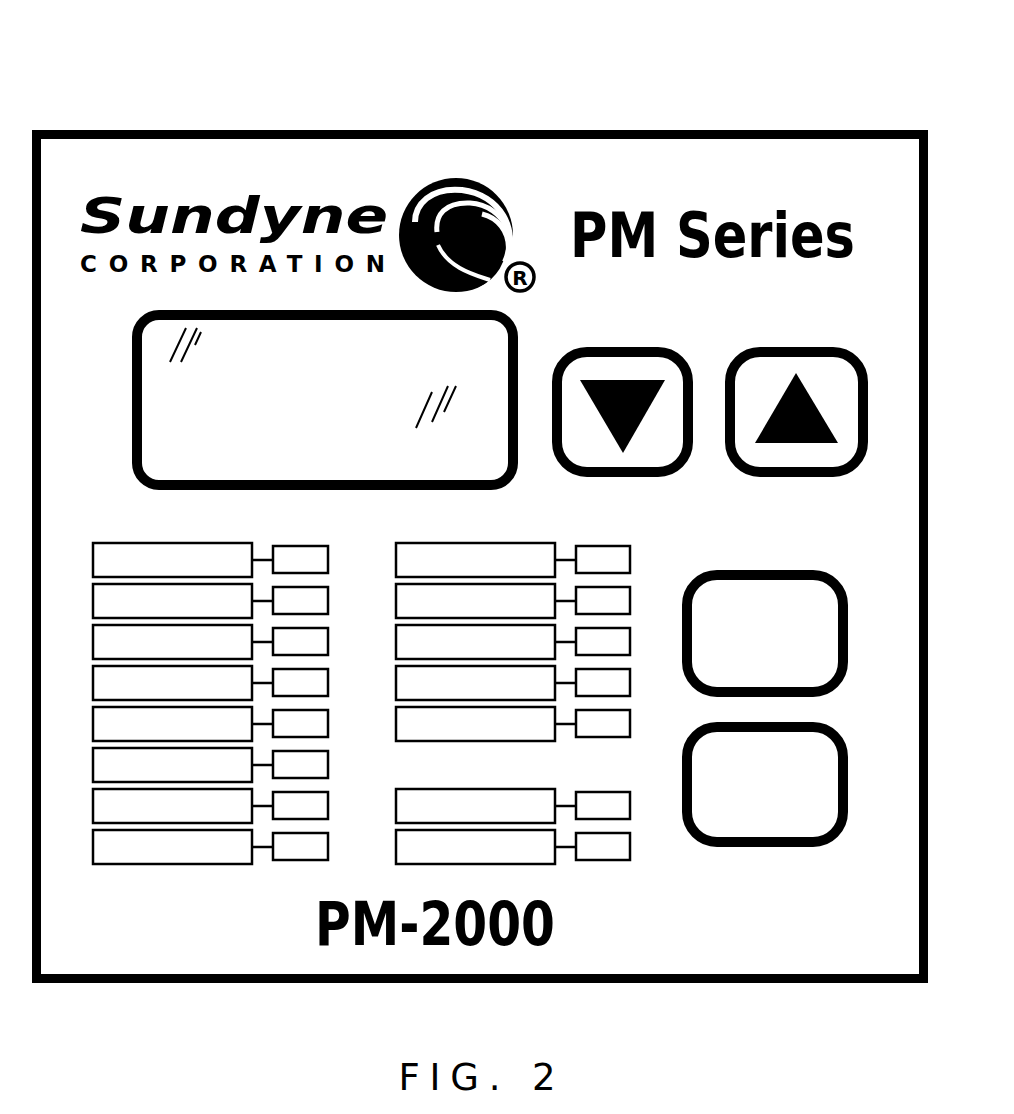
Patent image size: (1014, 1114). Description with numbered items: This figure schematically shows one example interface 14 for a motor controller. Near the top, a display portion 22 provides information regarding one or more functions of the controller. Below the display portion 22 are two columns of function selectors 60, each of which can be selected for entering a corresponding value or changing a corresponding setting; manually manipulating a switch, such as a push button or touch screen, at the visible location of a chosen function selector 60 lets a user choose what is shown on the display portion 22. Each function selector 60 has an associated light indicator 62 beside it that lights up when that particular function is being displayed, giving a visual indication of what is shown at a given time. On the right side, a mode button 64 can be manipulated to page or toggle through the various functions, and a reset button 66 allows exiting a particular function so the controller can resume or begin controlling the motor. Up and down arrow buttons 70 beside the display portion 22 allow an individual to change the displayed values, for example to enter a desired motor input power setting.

The interface 14 is at (80, 115).
The display portion 22 is at (162, 410).
The function selectors 60 is at (115, 535).
The light indicator 62 is at (292, 866).
The mode button 64 is at (800, 583).
The reset button 66 is at (797, 832).
The up and down arrow buttons 70 is at (764, 352).